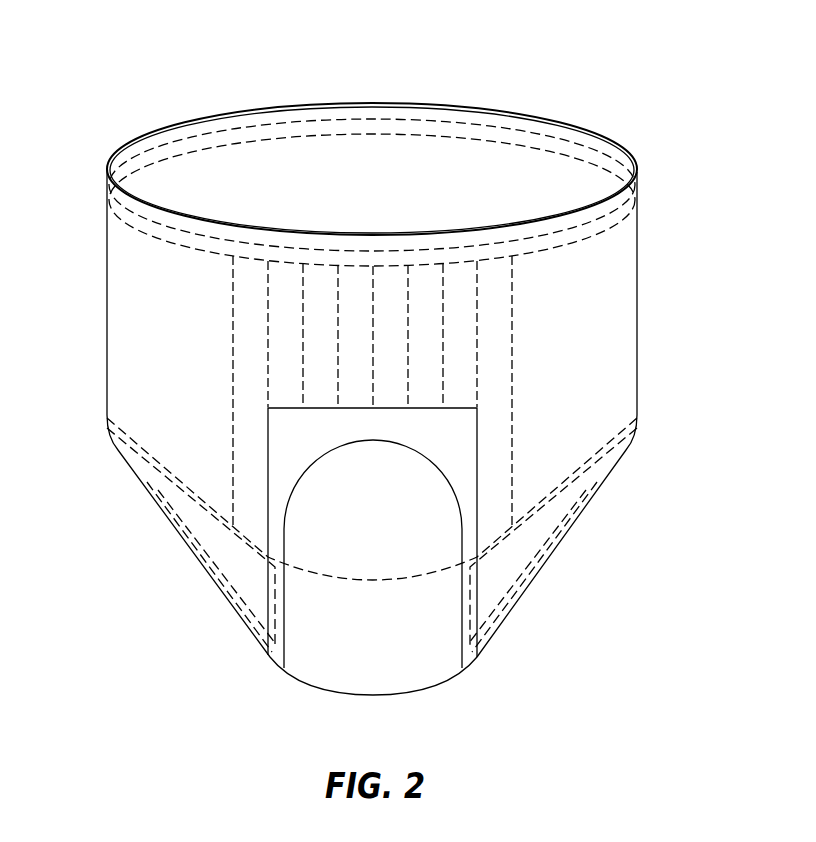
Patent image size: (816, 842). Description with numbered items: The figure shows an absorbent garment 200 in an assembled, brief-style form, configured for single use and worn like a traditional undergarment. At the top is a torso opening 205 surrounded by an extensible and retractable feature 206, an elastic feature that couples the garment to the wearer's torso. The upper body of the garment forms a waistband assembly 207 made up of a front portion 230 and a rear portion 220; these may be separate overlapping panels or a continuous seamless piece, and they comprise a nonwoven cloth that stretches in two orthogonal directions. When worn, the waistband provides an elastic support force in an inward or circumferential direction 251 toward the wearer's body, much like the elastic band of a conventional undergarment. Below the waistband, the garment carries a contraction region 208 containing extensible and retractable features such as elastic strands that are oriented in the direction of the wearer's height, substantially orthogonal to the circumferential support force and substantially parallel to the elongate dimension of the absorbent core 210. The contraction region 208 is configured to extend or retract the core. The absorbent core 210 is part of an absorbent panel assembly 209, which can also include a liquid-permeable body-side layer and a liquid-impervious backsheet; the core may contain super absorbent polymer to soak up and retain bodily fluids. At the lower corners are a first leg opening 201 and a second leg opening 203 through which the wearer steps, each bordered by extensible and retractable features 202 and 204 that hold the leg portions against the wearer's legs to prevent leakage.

The absorbent garment 200 is at (126, 60).
The rear portion 220 is at (297, 104).
The extensible and retractable feature 206 is at (435, 122).
The torso opening 205 is at (580, 175).
The inward or circumferential direction 251 is at (103, 183).
The waistband assembly 207 is at (101, 295).
The front portion 230 is at (125, 372).
The contraction region 208 is at (262, 310).
The absorbent panel assembly 209 is at (262, 437).
The absorbent core 210 is at (415, 672).
The second leg opening 203 is at (227, 561).
The extensible and retractable feature 204 is at (238, 607).
The first leg opening 201 is at (518, 561).
The extensible and retractable feature 202 is at (504, 607).